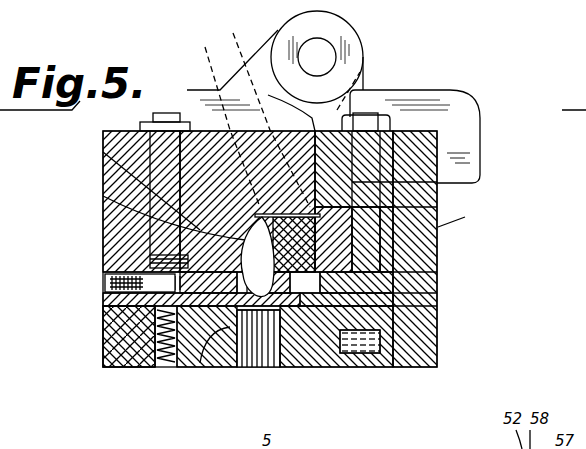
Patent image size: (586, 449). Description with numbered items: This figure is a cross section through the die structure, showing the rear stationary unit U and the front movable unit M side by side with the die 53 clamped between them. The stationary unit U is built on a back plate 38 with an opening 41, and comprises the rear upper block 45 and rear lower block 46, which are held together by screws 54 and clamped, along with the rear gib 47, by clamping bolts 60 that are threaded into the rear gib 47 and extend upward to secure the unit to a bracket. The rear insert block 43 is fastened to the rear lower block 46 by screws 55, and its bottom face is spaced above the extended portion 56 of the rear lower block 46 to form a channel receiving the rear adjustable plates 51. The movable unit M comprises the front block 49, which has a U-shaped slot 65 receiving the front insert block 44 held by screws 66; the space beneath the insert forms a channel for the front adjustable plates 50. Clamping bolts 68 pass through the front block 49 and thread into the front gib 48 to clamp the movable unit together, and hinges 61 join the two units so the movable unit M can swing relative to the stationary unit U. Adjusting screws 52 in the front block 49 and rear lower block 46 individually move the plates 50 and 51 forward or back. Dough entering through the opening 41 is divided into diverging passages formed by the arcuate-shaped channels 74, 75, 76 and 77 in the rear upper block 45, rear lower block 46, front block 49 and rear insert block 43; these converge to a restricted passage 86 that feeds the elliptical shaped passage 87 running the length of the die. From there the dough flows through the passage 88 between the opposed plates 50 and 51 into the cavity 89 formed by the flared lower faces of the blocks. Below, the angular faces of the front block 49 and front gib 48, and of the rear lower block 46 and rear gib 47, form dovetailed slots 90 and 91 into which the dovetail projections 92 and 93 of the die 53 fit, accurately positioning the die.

The back plate 38 is at (438, 207).
The opening 41 is at (440, 182).
The rear insert block 43 is at (440, 243).
The front insert block 44 is at (240, 262).
The rear upper block 45 is at (390, 127).
The rear lower block 46 is at (370, 261).
The rear gib 47 is at (390, 367).
The front gib 48 is at (165, 362).
The front block 49 is at (200, 128).
The front adjustable plates 50 is at (200, 363).
The rear adjustable plates 51 is at (295, 368).
The adjusting screws 52 is at (103, 306).
The die 53 is at (236, 368).
The screws 54 is at (478, 160).
The screws 55 is at (440, 231).
The extended portion 56 is at (325, 367).
The clamping bolts 60 is at (370, 115).
The hinges 61 is at (369, 54).
The U-shaped slot 65 is at (103, 196).
The screws 66 is at (103, 277).
The clamping bolts 68 is at (155, 112).
The arcuate-shaped channel 74 is at (417, 87).
The arcuate-shaped channel 75 is at (440, 198).
The arcuate-shaped channel 76 is at (240, 56).
The arcuate-shaped channel 77 is at (218, 88).
The restricted passage 86 is at (103, 152).
The elliptical shaped passage 87 is at (103, 367).
The passage 88 is at (268, 368).
The cavity 89 is at (230, 330).
The dovetailed slot 90 is at (173, 370).
The dovetailed slot 91 is at (315, 368).
The dovetail projection 92 is at (167, 367).
The dovetail projection 93 is at (313, 370).
The movable unit M is at (100, 347).
The stationary unit U is at (443, 343).